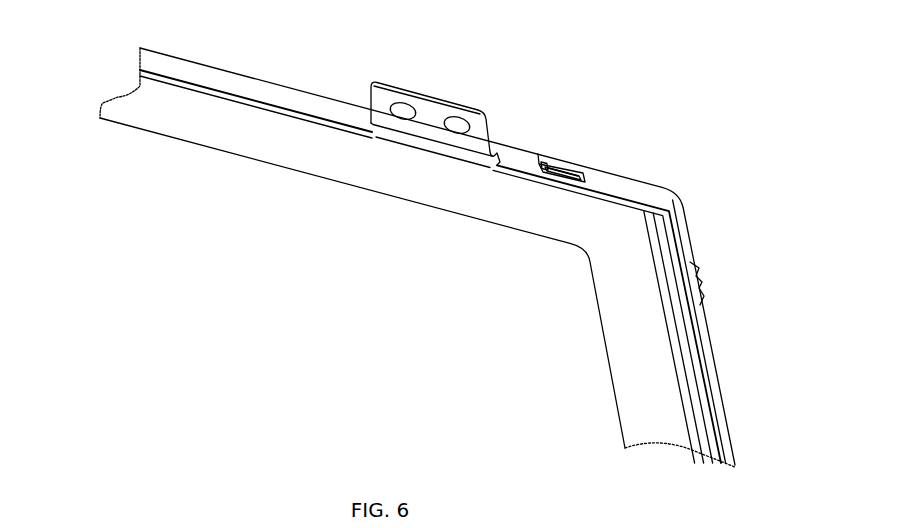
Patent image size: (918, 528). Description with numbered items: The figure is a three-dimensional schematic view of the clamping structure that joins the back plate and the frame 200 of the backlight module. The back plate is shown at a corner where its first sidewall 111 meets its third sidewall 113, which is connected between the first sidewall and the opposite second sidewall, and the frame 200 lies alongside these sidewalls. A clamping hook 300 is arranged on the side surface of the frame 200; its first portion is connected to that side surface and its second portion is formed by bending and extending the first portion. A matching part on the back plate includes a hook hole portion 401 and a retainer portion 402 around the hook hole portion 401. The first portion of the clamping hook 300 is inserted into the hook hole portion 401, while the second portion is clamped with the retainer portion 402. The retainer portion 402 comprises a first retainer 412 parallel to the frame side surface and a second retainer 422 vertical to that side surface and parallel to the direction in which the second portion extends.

The first sidewall 111 is at (620, 187).
The third sidewall 113 is at (712, 357).
The frame 200 is at (282, 152).
The clamping hook 300 is at (563, 173).
The hook hole portion 401 is at (578, 173).
The retainer portion 402 is at (525, 47).
The first retainer 412 is at (560, 163).
The second retainer 422 is at (545, 162).